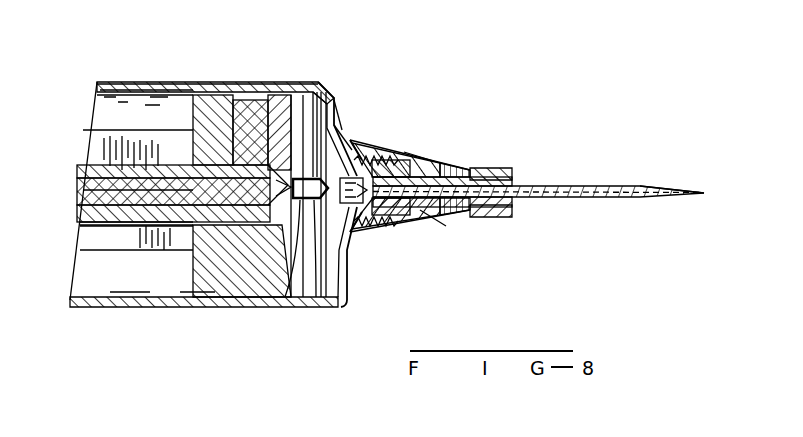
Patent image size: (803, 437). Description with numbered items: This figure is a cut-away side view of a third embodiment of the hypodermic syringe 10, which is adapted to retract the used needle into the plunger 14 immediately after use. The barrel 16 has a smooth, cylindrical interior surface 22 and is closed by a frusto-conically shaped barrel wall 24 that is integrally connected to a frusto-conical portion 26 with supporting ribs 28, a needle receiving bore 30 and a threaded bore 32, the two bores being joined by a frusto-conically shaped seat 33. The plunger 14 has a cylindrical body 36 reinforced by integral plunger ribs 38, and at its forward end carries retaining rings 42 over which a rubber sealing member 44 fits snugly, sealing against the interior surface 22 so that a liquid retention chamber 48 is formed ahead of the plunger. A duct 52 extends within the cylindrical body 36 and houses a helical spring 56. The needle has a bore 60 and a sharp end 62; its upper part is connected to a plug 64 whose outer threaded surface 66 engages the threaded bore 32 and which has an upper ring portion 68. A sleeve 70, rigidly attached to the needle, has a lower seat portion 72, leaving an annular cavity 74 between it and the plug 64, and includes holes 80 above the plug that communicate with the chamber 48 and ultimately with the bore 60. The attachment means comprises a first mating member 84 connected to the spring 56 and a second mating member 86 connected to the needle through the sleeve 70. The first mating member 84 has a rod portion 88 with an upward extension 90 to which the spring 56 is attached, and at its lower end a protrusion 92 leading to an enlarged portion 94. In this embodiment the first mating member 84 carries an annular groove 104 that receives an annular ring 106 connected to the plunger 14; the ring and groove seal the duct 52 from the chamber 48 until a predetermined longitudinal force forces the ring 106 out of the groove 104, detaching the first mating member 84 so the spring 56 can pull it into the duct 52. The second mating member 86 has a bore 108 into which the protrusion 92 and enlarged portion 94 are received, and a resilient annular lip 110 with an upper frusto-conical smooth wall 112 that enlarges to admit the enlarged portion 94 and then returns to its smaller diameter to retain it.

The hypodermic syringe 10 is at (408, 262).
The plunger 14 is at (140, 100).
The barrel 16 is at (162, 84).
The interior surface 22 is at (90, 296).
The barrel wall 24 is at (344, 98).
The frusto-conical portion 26 is at (465, 150).
The supporting ribs 28 is at (458, 170).
The needle receiving bore 30 is at (516, 196).
The threaded bore 32 is at (366, 155).
The seat 33 is at (438, 218).
The cylindrical body 36 is at (82, 222).
The plunger ribs 38 is at (92, 150).
The retaining rings 42 is at (152, 100).
The rubber sealing member 44 is at (212, 296).
The liquid retention chamber 48 is at (310, 297).
The duct 52 is at (150, 226).
The helical spring 56 is at (80, 190).
The bore 60 is at (624, 186).
The sharp end 62 is at (680, 190).
The plug 64 is at (390, 160).
The outer threaded surface 66 is at (392, 228).
The upper ring portion 68 is at (358, 148).
The sleeve 70 is at (406, 216).
The lower seat portion 72 is at (448, 160).
The annular cavity 74 is at (420, 156).
The holes 80 is at (360, 204).
The first mating member 84 is at (310, 92).
The second mating member 86 is at (345, 262).
The rod portion 88 is at (272, 200).
The extension 90 is at (255, 188).
The protrusion 92 is at (324, 92).
The enlarged portion 94 is at (300, 290).
The annular groove 104 is at (258, 125).
The annular ring 106 is at (278, 120).
The bore 108 is at (350, 130).
The annular lip 110 is at (318, 300).
The upper frusto-conical smooth wall 112 is at (346, 304).